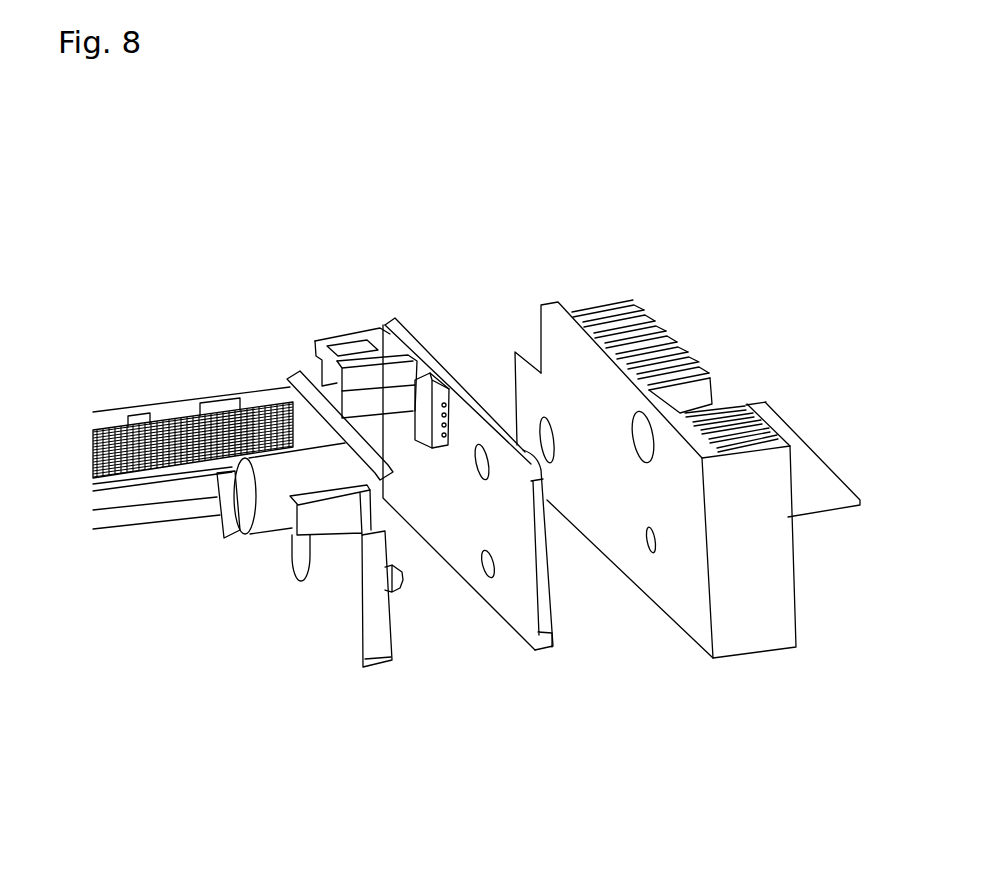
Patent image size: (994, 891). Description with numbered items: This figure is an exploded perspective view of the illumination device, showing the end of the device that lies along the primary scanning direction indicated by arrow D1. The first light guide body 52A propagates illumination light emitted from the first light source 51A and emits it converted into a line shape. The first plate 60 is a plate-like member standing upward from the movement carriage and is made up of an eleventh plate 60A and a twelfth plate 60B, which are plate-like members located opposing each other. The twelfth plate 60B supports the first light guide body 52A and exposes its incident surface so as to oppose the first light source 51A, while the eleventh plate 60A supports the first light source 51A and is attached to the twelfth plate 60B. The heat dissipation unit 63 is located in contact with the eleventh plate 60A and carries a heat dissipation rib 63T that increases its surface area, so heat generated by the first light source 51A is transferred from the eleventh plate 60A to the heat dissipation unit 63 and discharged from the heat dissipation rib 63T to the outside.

The first light guide body 52A is at (187, 431).
The first light source 51A is at (425, 382).
The first plate 60 is at (421, 561).
The eleventh plate 60A is at (515, 616).
The twelfth plate 60B is at (350, 625).
The heat dissipation unit 63 is at (687, 501).
The heat dissipation rib 63T is at (632, 300).
The arrow D1 (primary scanning direction) D1 is at (210, 637).